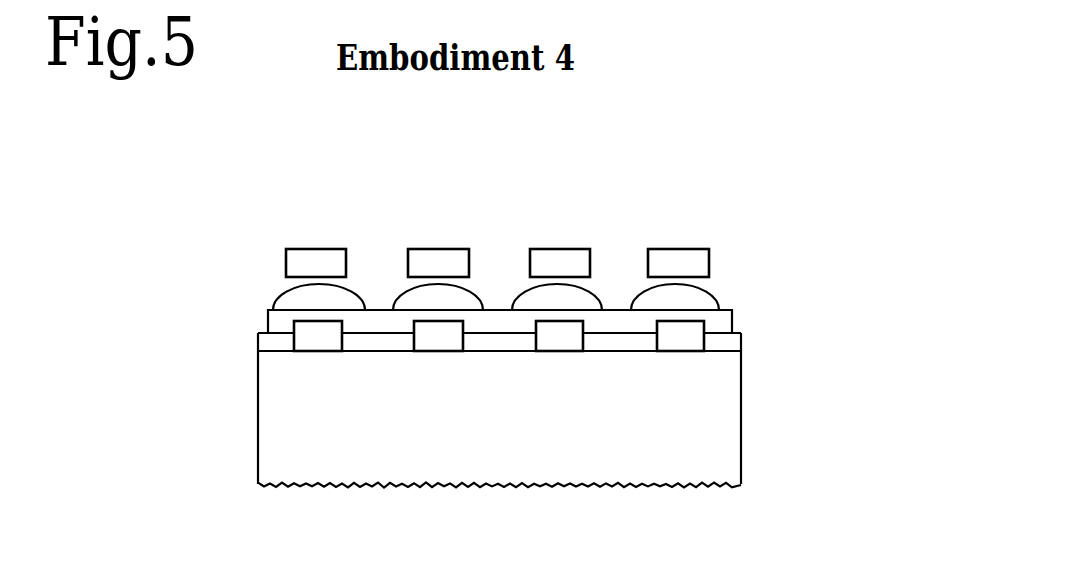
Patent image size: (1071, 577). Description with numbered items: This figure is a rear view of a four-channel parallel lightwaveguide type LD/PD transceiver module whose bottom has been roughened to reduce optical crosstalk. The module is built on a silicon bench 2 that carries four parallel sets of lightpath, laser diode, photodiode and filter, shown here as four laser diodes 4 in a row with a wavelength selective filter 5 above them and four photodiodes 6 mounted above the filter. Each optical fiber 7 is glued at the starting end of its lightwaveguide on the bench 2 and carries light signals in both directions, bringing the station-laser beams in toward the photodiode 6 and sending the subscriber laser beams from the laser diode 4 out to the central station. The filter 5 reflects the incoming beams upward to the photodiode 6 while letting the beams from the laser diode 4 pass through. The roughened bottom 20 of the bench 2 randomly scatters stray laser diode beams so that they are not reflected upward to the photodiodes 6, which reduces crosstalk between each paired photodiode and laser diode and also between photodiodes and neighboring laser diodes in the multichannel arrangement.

The silicon bench 2 is at (703, 430).
The laser diode 4 is at (307, 348).
The wavelength selective filter 5 is at (280, 330).
The photodiode 6 is at (331, 256).
The optical fiber 7 is at (303, 299).
The roughened bottom 20 is at (548, 487).